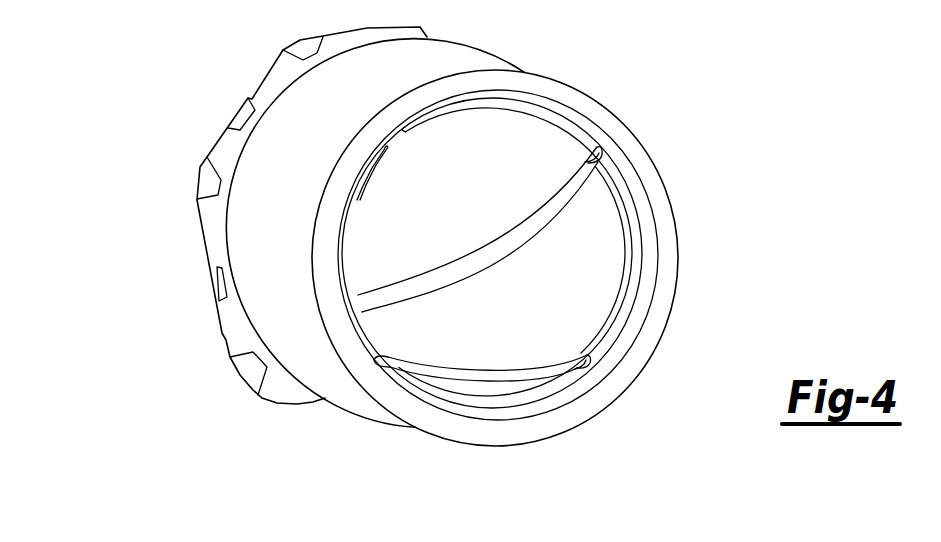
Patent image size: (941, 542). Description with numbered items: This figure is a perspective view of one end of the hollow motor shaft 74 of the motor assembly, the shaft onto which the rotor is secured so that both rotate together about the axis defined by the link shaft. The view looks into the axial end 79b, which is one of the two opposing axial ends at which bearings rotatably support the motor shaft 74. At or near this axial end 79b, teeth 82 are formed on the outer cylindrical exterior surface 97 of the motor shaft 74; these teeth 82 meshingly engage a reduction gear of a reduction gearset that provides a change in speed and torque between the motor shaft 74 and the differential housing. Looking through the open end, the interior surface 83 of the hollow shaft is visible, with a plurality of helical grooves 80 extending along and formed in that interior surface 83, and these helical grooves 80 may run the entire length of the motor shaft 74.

The hollow motor shaft 74 is at (210, 92).
The exterior surface 97 is at (275, 210).
The teeth 82 is at (230, 333).
The axial end 79b is at (663, 228).
The interior surface 83 is at (565, 297).
The helical grooves 80 is at (597, 150).